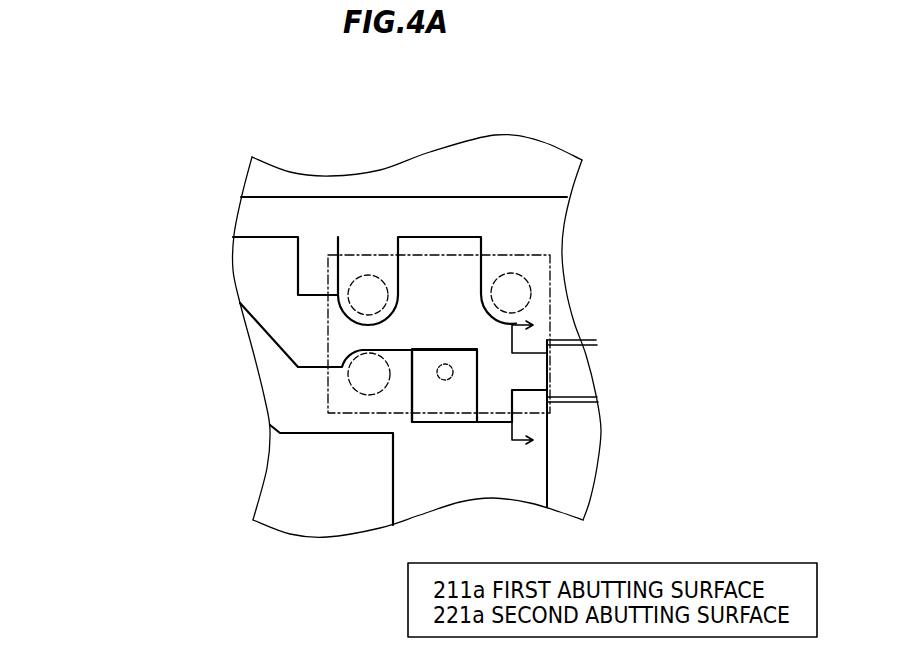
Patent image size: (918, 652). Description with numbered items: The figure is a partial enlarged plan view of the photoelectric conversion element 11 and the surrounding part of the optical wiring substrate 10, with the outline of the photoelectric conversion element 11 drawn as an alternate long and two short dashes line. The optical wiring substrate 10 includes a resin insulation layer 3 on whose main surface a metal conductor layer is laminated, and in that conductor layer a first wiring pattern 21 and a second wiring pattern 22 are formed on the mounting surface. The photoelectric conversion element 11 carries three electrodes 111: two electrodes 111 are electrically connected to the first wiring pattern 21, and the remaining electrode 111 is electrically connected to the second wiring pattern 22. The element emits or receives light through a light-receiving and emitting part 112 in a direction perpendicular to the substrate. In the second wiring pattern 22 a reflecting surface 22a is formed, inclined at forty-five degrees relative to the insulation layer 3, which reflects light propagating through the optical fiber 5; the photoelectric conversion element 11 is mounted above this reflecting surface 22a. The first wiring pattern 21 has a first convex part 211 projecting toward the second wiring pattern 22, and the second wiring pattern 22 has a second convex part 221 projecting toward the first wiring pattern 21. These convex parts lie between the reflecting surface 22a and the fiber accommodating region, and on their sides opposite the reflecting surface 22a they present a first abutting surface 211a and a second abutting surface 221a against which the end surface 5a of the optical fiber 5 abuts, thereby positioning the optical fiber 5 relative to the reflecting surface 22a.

The optical wiring substrate 10 is at (143, 80).
The insulation layer 3 is at (582, 468).
The optical fiber 5 is at (582, 375).
The end surface of optical fiber 5a is at (545, 373).
The photoelectric conversion element 11 is at (550, 278).
The electrode 111 is at (367, 277).
The light-receiving and emitting part 112 is at (442, 363).
The first wiring pattern 21 is at (242, 225).
The second wiring pattern 22 is at (272, 368).
The reflecting surface 22a is at (442, 415).
The first convex part 211 is at (537, 338).
The first abutting surface 211a is at (597, 343).
The second convex part 221 is at (532, 402).
The second abutting surface 221a is at (597, 399).